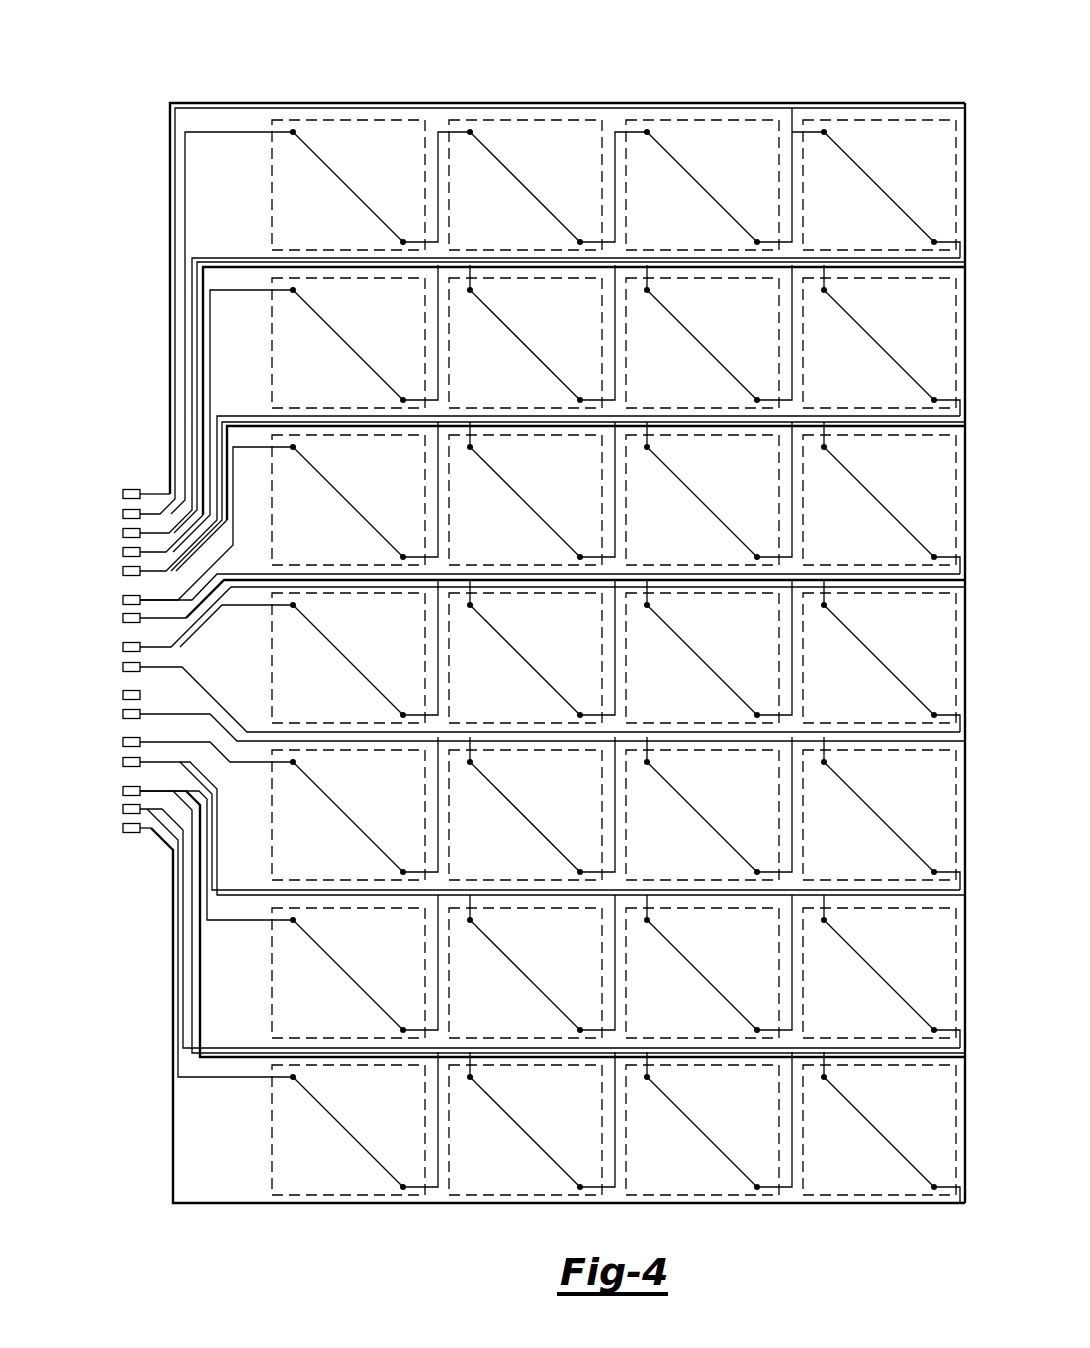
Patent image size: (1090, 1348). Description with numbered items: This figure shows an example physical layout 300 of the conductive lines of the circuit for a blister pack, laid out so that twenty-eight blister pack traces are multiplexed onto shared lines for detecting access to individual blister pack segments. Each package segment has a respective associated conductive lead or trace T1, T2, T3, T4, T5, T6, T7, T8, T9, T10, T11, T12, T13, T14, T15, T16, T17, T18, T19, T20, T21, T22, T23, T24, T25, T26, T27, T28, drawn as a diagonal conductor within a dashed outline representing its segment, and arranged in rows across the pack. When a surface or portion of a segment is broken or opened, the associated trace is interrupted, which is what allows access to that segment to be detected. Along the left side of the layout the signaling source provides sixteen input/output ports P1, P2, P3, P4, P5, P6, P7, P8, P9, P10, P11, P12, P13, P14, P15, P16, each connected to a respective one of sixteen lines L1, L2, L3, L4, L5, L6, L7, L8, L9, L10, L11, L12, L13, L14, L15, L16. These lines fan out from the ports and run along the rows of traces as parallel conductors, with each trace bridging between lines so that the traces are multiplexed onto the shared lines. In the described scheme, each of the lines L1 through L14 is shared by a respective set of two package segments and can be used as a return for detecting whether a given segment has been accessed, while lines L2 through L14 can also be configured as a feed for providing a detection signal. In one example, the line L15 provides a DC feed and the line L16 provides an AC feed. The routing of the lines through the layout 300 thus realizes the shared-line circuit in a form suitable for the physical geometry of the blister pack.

The physical layout 300 is at (845, 56).
The trace T1 is at (348, 185).
The trace T2 is at (525, 185).
The trace T3 is at (702, 185).
The trace T4 is at (879, 185).
The trace T5 is at (348, 343).
The trace T6 is at (525, 343).
The trace T7 is at (702, 343).
The trace T8 is at (879, 343).
The trace T9 is at (348, 500).
The trace T10 is at (525, 500).
The trace T11 is at (702, 500).
The trace T12 is at (879, 500).
The trace T13 is at (348, 658).
The trace T14 is at (525, 658).
The trace T15 is at (702, 658).
The trace T16 is at (879, 658).
The trace T17 is at (348, 815).
The trace T18 is at (525, 815).
The trace T19 is at (702, 815).
The trace T20 is at (879, 815).
The trace T21 is at (348, 973).
The trace T22 is at (525, 973).
The trace T23 is at (702, 973).
The trace T24 is at (879, 973).
The trace T25 is at (348, 1130).
The trace T26 is at (525, 1130).
The trace T27 is at (702, 1130).
The trace T28 is at (879, 1130).
The input/output port P1 is at (113, 495).
The input/output port P2 is at (101, 515).
The input/output port P3 is at (113, 534).
The input/output port P4 is at (101, 553).
The input/output port P5 is at (113, 572).
The input/output port P6 is at (113, 601).
The input/output port P7 is at (101, 619).
The input/output port P8 is at (113, 648).
The input/output port P9 is at (101, 668).
The input/output port P10 is at (112, 696).
The input/output port P11 is at (100, 715).
The input/output port P12 is at (112, 743).
The input/output port P13 is at (100, 763).
The input/output port P14 is at (112, 792).
The input/output port P15 is at (100, 810).
The input/output port P16 is at (112, 829).
The line L1 is at (168, 483).
The line L2 is at (183, 461).
The line L3 is at (195, 440).
The line L4 is at (212, 417).
The line L5 is at (232, 537).
The line L6 is at (199, 598).
The line L7 is at (194, 620).
The line L8 is at (189, 638).
The line L9 is at (216, 705).
The line L10 is at (228, 755).
The line L11 is at (215, 842).
The line L12 is at (202, 863).
The line L13 is at (192, 885).
The line L14 is at (177, 906).
The line L15 is at (183, 927).
The line L16 is at (168, 949).